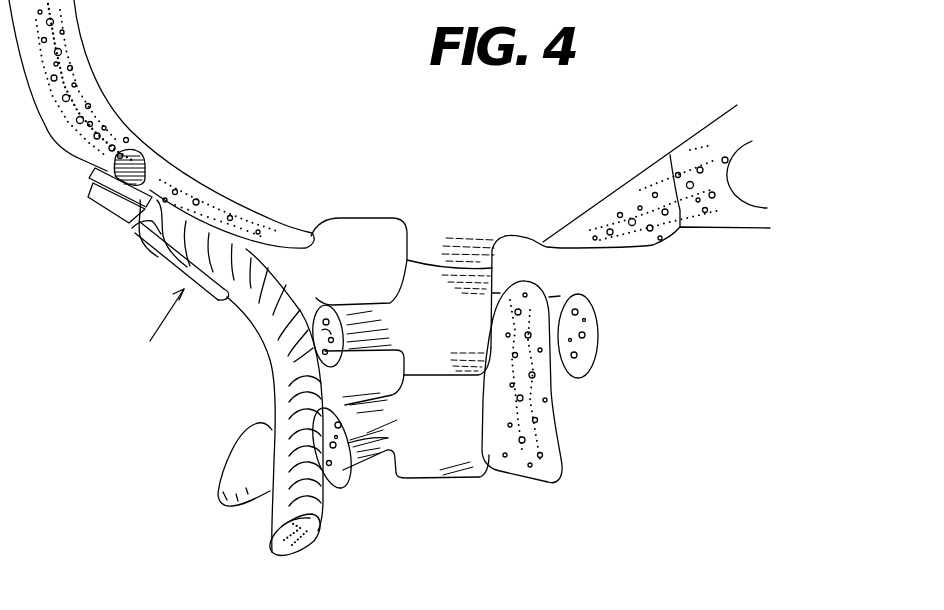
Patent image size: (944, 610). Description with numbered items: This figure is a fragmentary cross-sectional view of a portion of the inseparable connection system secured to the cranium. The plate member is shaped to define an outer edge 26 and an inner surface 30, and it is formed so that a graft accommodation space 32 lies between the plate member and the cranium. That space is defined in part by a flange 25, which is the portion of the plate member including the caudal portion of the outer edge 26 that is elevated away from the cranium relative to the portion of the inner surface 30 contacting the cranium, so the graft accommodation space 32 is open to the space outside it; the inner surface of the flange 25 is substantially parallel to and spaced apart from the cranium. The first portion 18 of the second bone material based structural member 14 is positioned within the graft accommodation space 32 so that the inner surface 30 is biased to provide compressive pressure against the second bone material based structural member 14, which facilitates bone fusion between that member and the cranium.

The second bone material based structural member 14 is at (288, 408).
The first portion 18 is at (205, 250).
The flange 25 is at (150, 250).
The outer edge 26 is at (227, 297).
The inner surface 30 is at (148, 233).
The graft accommodation space 32 is at (153, 220).